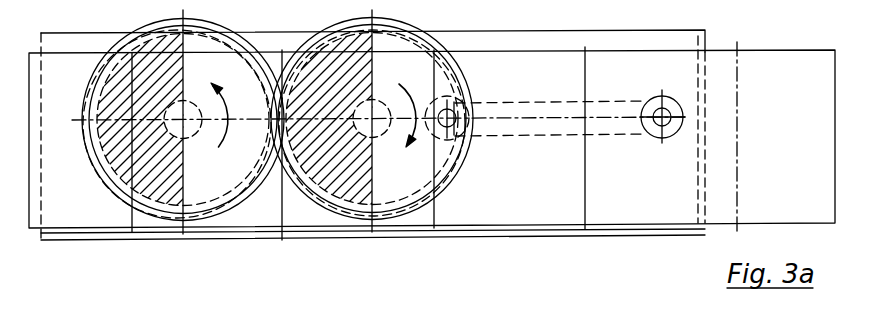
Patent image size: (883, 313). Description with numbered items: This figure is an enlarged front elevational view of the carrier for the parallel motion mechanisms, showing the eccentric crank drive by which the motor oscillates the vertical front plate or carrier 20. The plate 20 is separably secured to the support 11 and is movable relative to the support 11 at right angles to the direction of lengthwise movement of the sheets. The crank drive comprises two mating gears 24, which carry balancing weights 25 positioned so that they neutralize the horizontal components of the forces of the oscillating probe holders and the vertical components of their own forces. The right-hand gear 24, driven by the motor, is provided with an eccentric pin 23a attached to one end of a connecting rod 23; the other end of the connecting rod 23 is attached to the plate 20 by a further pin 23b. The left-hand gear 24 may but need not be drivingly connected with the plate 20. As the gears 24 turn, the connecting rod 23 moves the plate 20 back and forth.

The support 11 is at (689, 43).
The front plate 20 is at (820, 207).
The connecting rod 23 is at (513, 124).
The eccentric pin 23a is at (466, 90).
The further pin 23b is at (651, 100).
The mating gears 24 is at (345, 203).
The balancing weights 25 is at (119, 163).